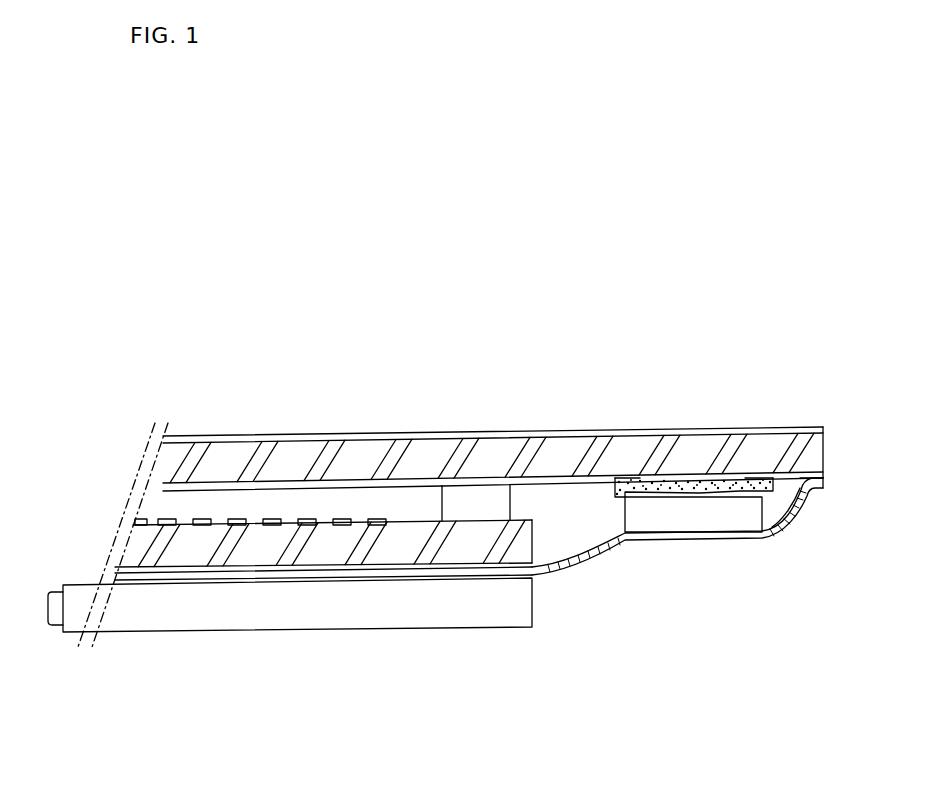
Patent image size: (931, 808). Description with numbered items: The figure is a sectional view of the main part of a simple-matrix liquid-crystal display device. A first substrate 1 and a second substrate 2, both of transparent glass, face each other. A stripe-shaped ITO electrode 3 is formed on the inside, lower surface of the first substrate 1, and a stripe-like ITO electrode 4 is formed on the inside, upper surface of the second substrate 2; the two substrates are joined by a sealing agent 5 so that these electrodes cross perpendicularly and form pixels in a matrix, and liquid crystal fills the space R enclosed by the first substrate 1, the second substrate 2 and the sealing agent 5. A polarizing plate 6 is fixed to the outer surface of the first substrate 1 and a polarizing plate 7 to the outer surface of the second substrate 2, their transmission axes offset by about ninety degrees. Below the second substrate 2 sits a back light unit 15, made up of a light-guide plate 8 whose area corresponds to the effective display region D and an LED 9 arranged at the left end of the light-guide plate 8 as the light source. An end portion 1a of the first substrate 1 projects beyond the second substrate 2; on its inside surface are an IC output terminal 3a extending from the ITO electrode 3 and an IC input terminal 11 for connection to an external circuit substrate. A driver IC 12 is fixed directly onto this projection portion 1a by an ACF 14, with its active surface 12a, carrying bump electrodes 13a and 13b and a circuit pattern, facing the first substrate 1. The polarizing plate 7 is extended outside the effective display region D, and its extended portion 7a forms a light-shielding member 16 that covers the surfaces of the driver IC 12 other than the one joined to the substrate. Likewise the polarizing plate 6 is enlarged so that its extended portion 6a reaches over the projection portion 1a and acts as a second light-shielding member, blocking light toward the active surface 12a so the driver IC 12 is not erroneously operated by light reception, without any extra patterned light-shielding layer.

The first substrate 1 is at (488, 457).
The end portion of the first substrate 1a is at (813, 420).
The second substrate 2 is at (412, 553).
The ITO electrode 3 is at (238, 494).
The IC output terminal 3a is at (572, 483).
The ITO electrode 4 is at (327, 585).
The sealing agent 5 is at (473, 510).
The polarizing plate 6 is at (322, 433).
The polarizing plate extended portion 6a is at (443, 378).
The polarizing plate 7 is at (198, 585).
The polarizing plate extended portion 7a is at (823, 508).
The light-guide plate 8 is at (127, 620).
The LED 9 is at (45, 644).
The IC input terminal 11 is at (812, 465).
The driver IC 12 is at (682, 522).
The active surface 12a is at (690, 478).
The bump electrode 13a is at (638, 480).
The bump electrode 13b is at (745, 478).
The ACF 14 is at (773, 497).
The back light unit 15 is at (279, 663).
The light-shielding member 16 is at (469, 553).
The space R is at (160, 507).
The effective display region D is at (439, 427).